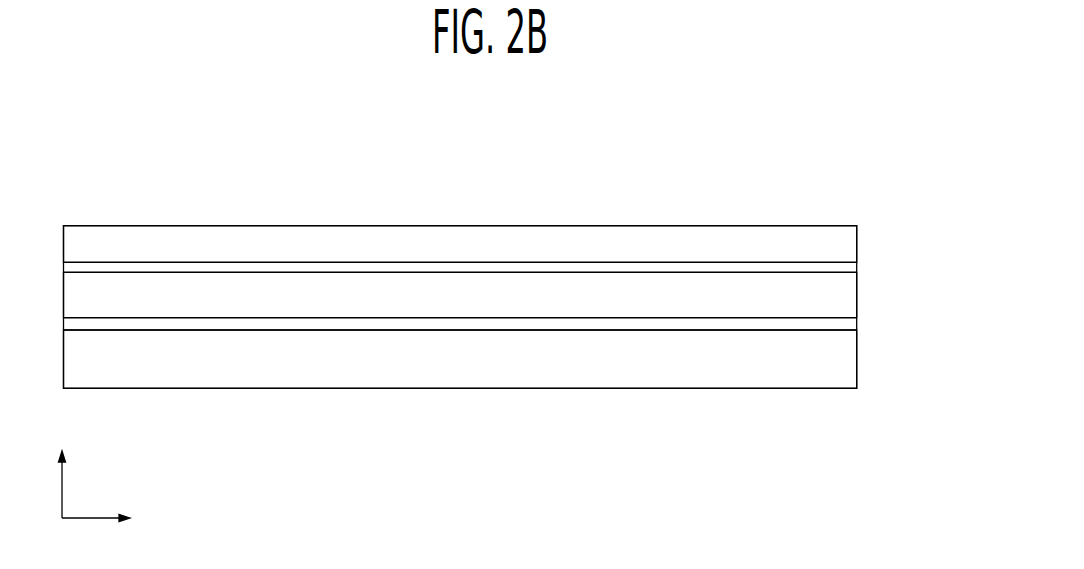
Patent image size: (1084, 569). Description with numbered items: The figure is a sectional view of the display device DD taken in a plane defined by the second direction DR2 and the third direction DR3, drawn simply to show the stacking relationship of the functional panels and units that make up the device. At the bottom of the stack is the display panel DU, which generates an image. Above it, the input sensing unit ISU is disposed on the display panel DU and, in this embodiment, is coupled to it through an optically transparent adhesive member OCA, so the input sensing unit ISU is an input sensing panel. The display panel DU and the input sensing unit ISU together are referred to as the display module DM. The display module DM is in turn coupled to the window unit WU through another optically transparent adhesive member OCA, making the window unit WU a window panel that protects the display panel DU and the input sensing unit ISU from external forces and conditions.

The display device DD is at (772, 146).
The window unit WU is at (863, 226).
The input sensing unit ISU is at (863, 273).
The display panel DU is at (863, 330).
The display module DM is at (910, 278).
The optically transparent adhesive member OCA is at (403, 325).
The second direction DR2 is at (117, 516).
The third direction DR3 is at (62, 466).